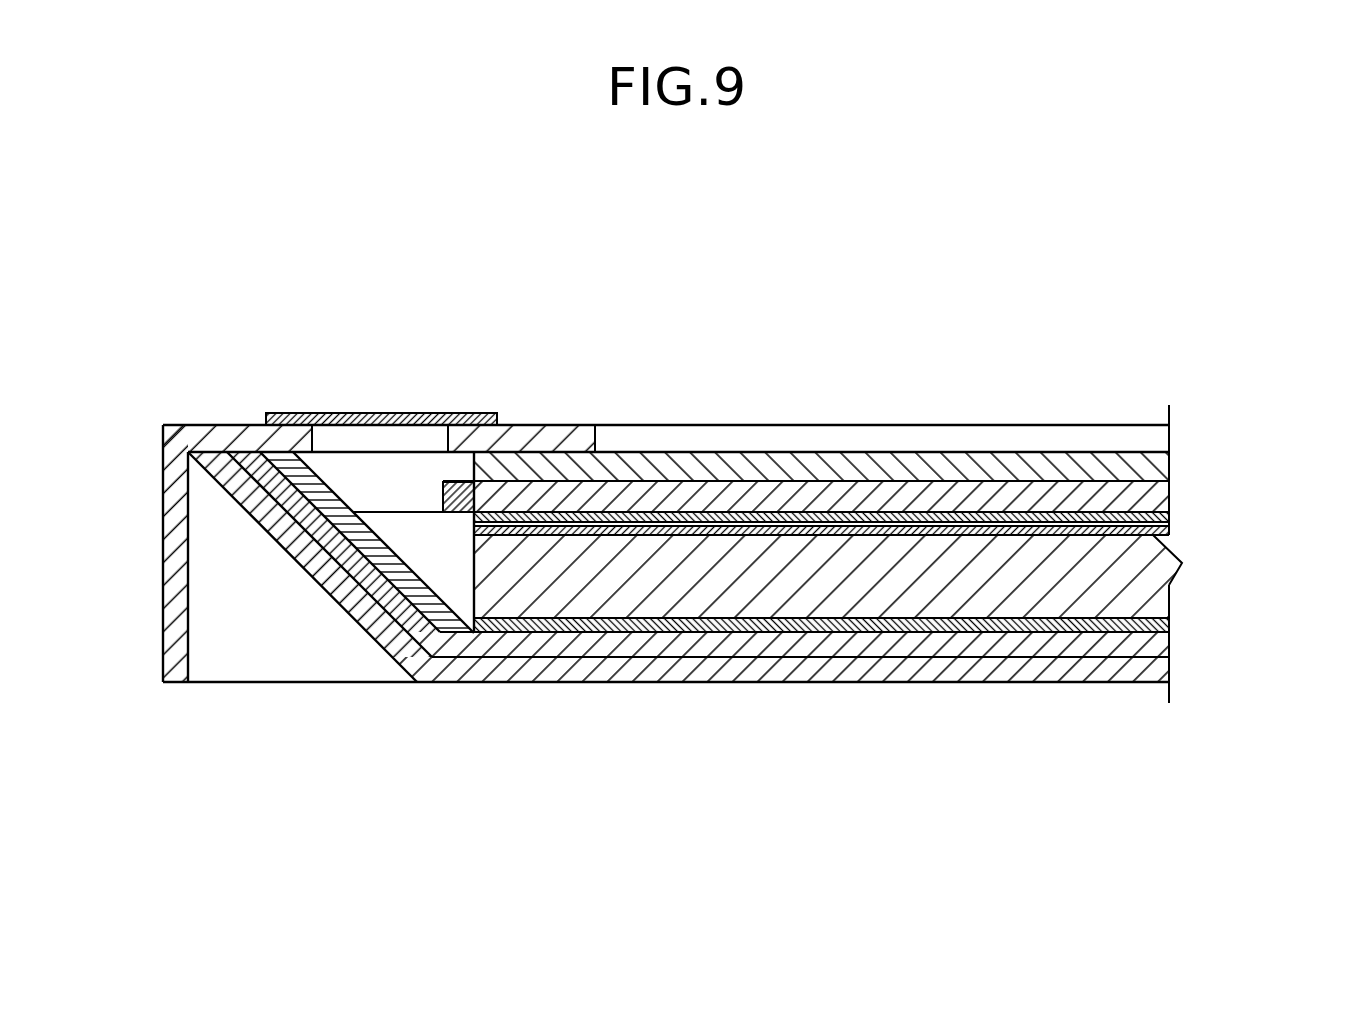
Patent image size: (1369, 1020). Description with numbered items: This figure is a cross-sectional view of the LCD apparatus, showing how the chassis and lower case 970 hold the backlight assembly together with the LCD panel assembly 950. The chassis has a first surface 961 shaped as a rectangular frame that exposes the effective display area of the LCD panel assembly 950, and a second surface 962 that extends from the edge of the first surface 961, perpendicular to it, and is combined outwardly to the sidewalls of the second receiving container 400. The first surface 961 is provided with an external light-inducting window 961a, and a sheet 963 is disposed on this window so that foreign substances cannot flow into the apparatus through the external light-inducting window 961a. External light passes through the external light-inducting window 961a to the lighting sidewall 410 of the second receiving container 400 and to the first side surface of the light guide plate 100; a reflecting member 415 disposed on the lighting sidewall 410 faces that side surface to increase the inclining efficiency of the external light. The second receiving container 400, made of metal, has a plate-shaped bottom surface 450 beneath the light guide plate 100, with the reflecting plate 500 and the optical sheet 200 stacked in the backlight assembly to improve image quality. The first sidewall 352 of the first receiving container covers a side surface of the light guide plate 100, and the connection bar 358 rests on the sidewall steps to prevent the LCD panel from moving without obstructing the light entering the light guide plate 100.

The light guide plate 100 is at (1157, 562).
The optical sheet 200 is at (1195, 515).
The first sidewall 352 is at (352, 448).
The connection bar 358 is at (470, 485).
The second receiving container 400 is at (780, 607).
The lighting sidewall 410 is at (330, 553).
The reflecting member 415 is at (387, 548).
The bottom surface 450 is at (900, 648).
The reflecting plate 500 is at (1170, 628).
The LCD panel assembly 950 is at (1195, 462).
The first surface 961 is at (203, 432).
The external light-inducting window 961a is at (433, 437).
The second surface 962 is at (167, 515).
The sheet 963 is at (387, 411).
The lower case 970 is at (752, 682).